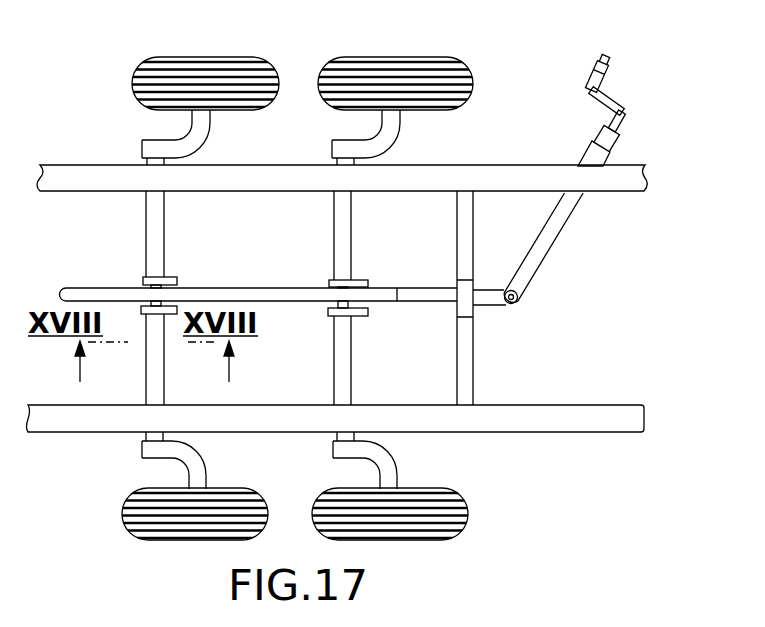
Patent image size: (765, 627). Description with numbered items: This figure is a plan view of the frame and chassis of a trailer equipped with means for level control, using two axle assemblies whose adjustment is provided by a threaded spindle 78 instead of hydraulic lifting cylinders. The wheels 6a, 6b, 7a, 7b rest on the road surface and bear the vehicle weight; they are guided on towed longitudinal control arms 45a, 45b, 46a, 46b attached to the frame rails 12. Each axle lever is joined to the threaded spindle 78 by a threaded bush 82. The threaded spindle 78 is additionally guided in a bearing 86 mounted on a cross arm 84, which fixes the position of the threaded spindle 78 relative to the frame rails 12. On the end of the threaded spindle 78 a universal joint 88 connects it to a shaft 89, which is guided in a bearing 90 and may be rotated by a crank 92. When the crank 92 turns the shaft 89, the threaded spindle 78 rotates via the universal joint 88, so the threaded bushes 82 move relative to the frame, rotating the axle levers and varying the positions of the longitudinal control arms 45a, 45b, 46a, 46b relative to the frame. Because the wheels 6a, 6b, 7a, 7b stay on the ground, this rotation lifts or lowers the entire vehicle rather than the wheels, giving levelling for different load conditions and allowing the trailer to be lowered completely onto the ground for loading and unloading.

The frame rails 12 is at (60, 166).
The wheel 7b is at (230, 63).
The wheel 6b is at (425, 63).
The wheel 7a is at (145, 528).
The wheel 6a is at (458, 523).
The towed longitudinal control arm 45b is at (202, 132).
The towed longitudinal control arm 46b is at (392, 133).
The towed longitudinal control arm 45a is at (170, 462).
The towed longitudinal control arm 46a is at (388, 468).
The threaded spindle 78 is at (75, 288).
The threaded bush 82 is at (167, 280).
The cross arm 84 is at (470, 387).
The bearing 86 is at (468, 313).
The universal joint 88 is at (518, 303).
The shaft 89 is at (558, 227).
The bearing 90 is at (606, 151).
The crank 92 is at (606, 60).